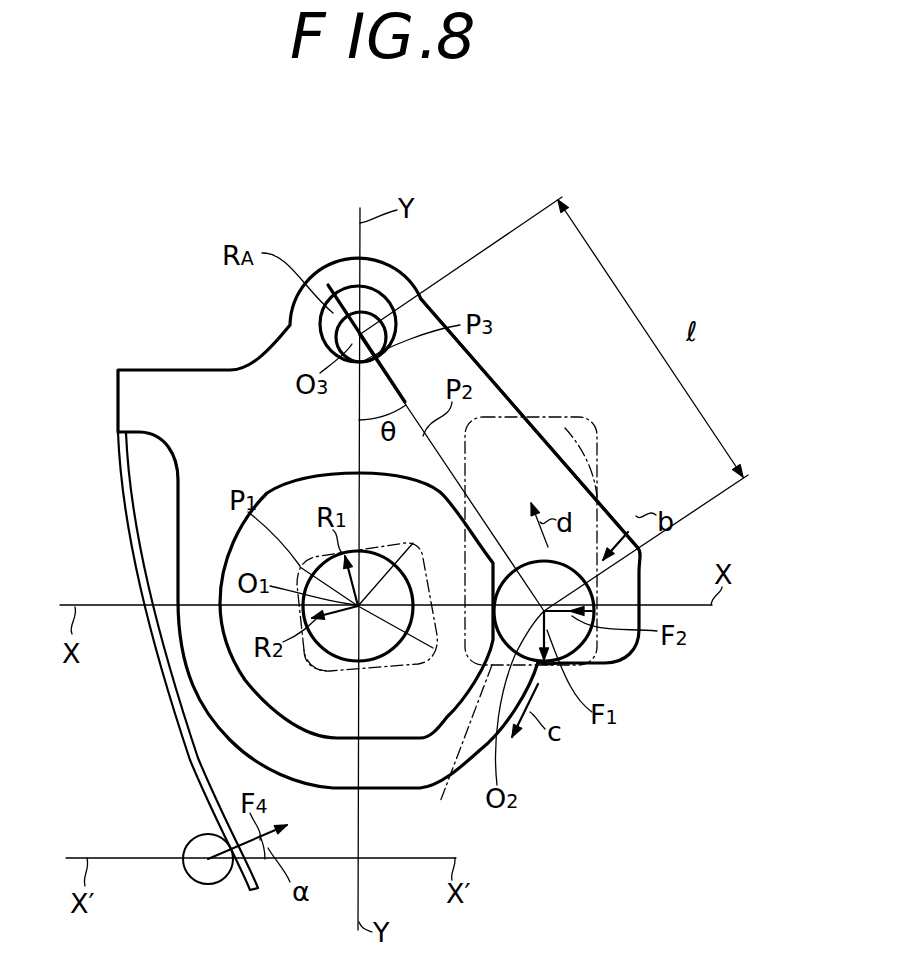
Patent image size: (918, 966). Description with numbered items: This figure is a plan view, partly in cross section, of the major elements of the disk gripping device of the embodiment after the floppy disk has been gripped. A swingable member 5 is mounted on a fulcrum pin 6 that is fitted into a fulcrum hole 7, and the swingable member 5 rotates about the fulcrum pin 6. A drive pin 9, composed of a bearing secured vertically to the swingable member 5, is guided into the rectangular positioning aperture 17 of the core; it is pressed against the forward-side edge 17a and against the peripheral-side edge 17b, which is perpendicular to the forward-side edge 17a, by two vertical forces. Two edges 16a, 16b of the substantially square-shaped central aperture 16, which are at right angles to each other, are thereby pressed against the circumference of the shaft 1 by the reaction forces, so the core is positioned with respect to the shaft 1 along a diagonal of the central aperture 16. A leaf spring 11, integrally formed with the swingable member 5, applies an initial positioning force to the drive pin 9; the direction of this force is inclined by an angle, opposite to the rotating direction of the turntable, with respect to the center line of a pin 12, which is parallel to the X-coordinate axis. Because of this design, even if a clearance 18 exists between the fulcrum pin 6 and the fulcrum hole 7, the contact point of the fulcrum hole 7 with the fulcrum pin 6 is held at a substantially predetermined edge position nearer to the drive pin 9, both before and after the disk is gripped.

The shaft 1 is at (348, 648).
The swingable member 5 is at (470, 367).
The fulcrum pin 6 is at (345, 331).
The fulcrum hole 7 is at (345, 297).
The drive pin 9 is at (577, 638).
The leaf spring 11 is at (193, 762).
The pin 12 is at (200, 873).
The central aperture 16 is at (425, 588).
The edge of central aperture 16a is at (390, 546).
The edge of central aperture 16b is at (320, 660).
The positioning aperture 17 is at (577, 416).
The forward-side edge 17a is at (451, 750).
The peripheral-side edge 17b is at (600, 505).
The clearance 18 is at (354, 300).